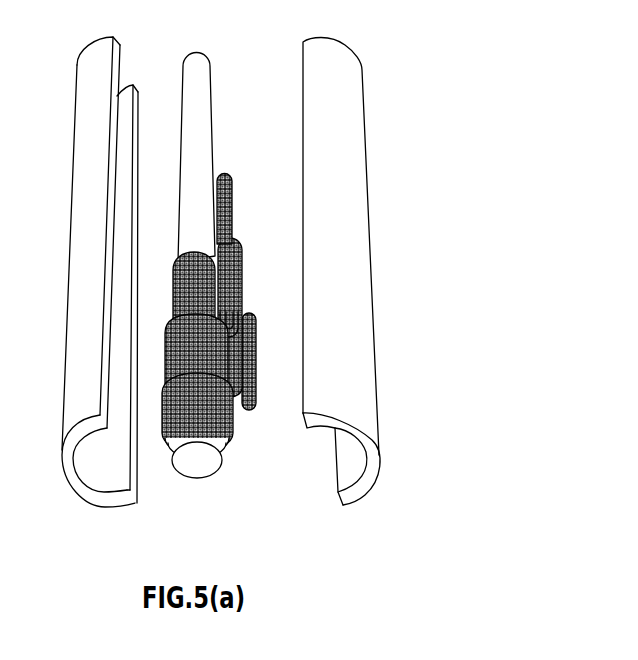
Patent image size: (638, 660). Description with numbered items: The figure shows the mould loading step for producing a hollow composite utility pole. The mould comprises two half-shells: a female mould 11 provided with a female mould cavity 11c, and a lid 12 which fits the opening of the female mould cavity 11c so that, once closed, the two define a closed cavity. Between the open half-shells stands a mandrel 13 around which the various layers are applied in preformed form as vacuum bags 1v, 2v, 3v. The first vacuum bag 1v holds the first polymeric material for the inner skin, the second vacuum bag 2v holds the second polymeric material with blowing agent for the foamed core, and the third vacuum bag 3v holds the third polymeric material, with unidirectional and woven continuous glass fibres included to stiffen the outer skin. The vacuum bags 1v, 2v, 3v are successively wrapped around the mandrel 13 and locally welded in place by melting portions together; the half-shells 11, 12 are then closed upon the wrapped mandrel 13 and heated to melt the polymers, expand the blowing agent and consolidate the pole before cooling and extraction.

The female mould 11 is at (115, 288).
The female mould cavity 11c is at (103, 467).
The lid 12 is at (363, 493).
The mandrel 13 is at (207, 69).
The first vacuum bag 1v is at (225, 173).
The second vacuum bag 2v is at (231, 243).
The third vacuum bag 3v is at (244, 318).